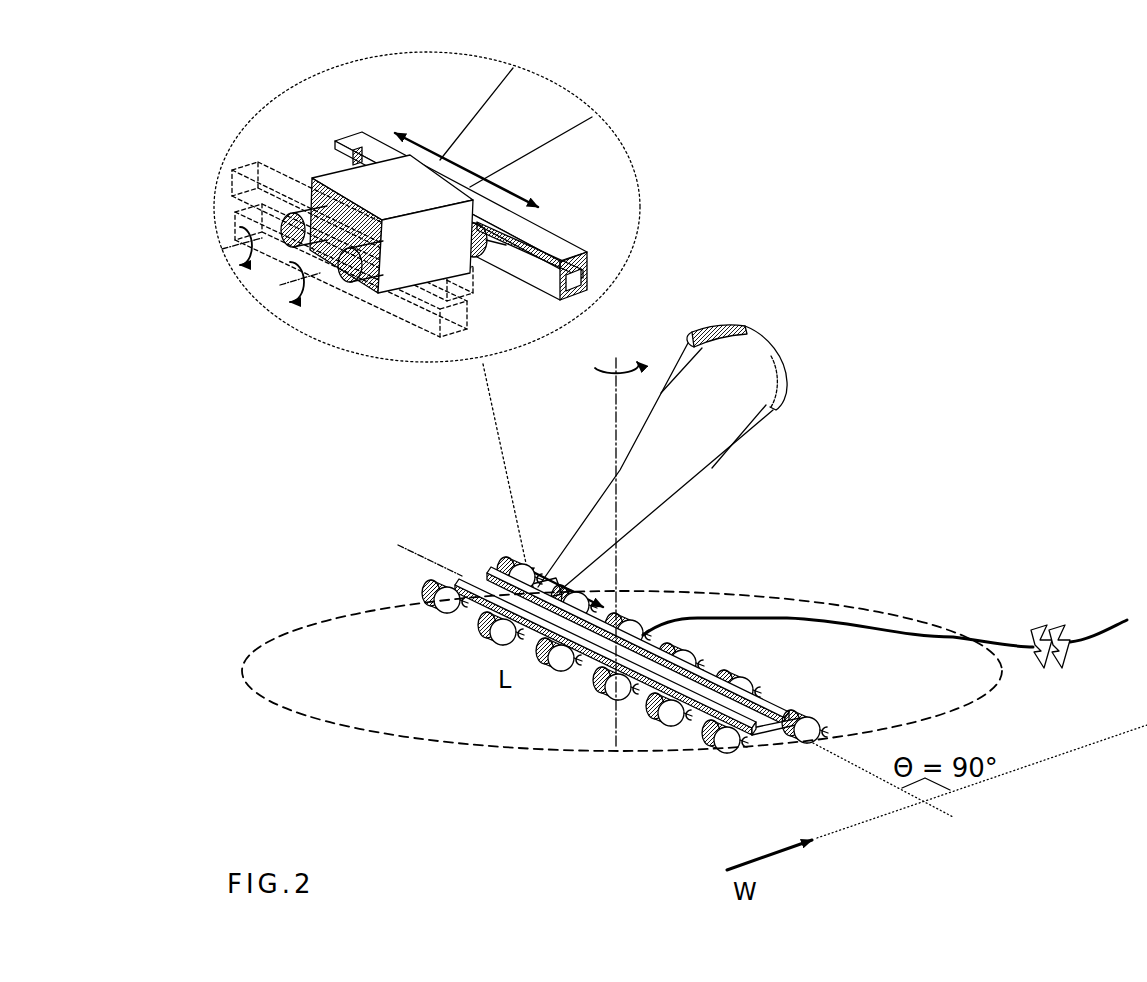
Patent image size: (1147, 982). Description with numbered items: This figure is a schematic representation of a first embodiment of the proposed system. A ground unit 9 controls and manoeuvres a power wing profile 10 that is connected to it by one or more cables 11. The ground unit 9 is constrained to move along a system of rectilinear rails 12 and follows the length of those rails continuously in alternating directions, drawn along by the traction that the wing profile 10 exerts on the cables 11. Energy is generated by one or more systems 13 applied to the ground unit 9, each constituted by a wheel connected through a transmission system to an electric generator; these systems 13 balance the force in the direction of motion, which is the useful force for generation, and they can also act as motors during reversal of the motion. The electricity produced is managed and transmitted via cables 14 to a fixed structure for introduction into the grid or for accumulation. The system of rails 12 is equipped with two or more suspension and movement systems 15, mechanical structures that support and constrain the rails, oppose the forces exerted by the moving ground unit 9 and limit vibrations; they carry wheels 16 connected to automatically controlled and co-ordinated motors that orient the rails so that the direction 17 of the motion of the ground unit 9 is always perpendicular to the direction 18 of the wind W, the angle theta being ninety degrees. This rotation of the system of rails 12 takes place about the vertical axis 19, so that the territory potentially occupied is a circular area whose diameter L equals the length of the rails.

The ground unit 9 is at (378, 187).
The power wing profile 10 is at (737, 354).
The cables 11 is at (606, 330).
The system of rectilinear rails 12 is at (700, 695).
The generating systems 13 is at (402, 282).
The cables 14 is at (885, 643).
The suspension and movement systems 15 is at (618, 666).
The wheels 16 is at (433, 587).
The direction of the motion of the ground unit 17 is at (894, 796).
The direction of the wind 18 is at (982, 781).
The vertical axis 19 is at (608, 553).